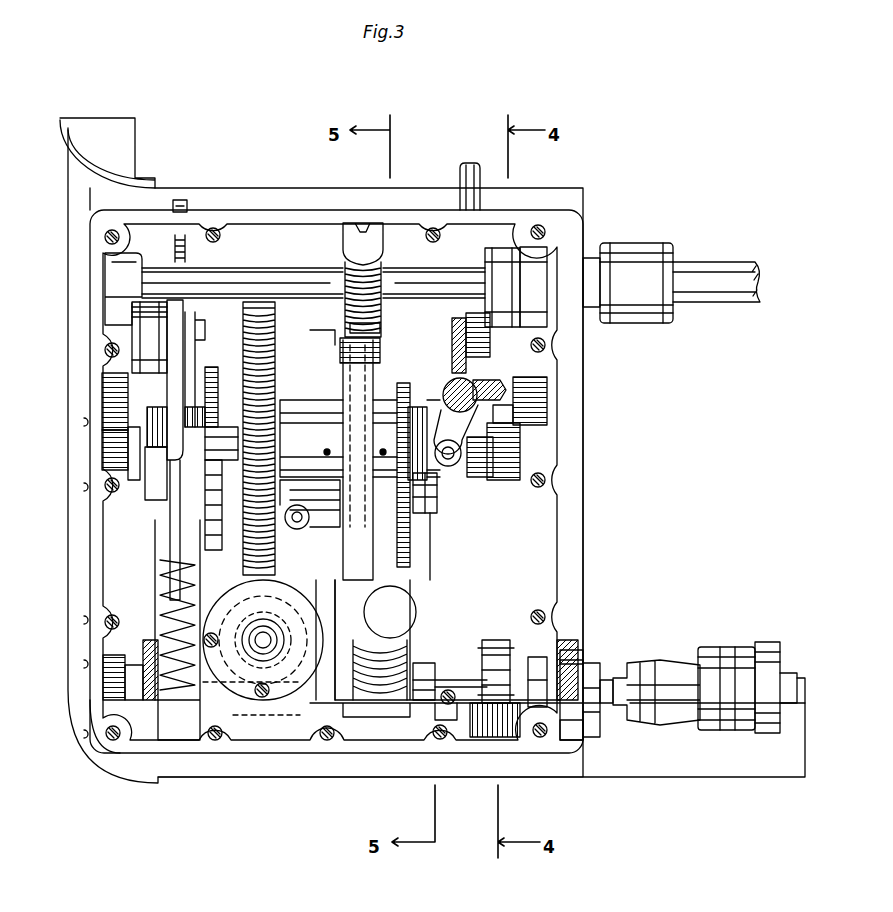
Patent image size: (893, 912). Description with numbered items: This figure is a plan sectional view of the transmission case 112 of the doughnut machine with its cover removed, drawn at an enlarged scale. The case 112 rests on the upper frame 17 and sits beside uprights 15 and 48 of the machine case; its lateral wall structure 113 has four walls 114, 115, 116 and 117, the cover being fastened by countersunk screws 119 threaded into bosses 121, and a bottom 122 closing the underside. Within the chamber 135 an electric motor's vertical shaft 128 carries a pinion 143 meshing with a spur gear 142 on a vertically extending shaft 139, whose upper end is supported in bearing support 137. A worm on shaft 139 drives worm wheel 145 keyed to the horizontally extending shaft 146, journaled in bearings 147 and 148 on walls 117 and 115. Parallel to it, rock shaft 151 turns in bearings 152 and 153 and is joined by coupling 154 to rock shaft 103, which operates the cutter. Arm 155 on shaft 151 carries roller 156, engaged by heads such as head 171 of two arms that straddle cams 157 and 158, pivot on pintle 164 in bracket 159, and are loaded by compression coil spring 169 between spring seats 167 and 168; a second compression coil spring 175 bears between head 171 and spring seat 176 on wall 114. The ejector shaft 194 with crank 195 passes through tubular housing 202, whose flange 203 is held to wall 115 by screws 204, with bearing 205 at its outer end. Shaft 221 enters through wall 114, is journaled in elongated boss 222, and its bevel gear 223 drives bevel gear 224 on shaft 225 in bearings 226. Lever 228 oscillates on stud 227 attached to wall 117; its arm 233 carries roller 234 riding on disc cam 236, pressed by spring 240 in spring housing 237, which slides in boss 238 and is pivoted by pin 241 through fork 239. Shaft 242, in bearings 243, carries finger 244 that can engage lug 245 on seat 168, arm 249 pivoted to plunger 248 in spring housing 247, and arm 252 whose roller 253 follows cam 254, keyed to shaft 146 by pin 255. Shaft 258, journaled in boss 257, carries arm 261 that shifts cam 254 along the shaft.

The uprights 15 is at (88, 766).
The upper and lower frames 17 is at (740, 770).
The uprights 48 is at (97, 172).
The rock shaft 103 is at (720, 275).
The case 112 is at (583, 185).
The lateral wall structure 113 is at (300, 210).
The wall 114 is at (278, 215).
The wall 115 is at (585, 533).
The wall 116 is at (247, 745).
The wall 117 is at (92, 543).
The countersunk screws 119 is at (108, 234).
The bosses 121 is at (115, 247).
The bottom 122 is at (550, 567).
The vertical shaft 128 is at (302, 528).
The chamber 135 is at (535, 517).
The bearing support 137 is at (248, 706).
The vertically extending shaft 139 is at (264, 648).
The spur gear 142 is at (228, 637).
The pinion 143 is at (287, 540).
The worm wheel 145 is at (231, 291).
The horizontally extending shaft 146 is at (477, 457).
The bearing 147 is at (112, 447).
The bearing 148 is at (537, 440).
The rock shaft 151 is at (230, 266).
The bearing 152 is at (112, 267).
The bearing 153 is at (530, 272).
The coupling 154 is at (647, 306).
The arm 155 is at (322, 335).
The roller 156 is at (377, 372).
The cam 157 is at (355, 392).
The cam 158 is at (335, 367).
The bracket 159 is at (315, 650).
The pintle 164 is at (379, 584).
The spring seat 167 is at (388, 613).
The spring seat 168 is at (357, 705).
The compression coil spring 169 is at (378, 702).
The head 171 is at (385, 328).
The compression coil spring 175 is at (378, 270).
The spring seat 176 is at (349, 254).
The shaft 194 is at (607, 680).
The crank 195 is at (782, 657).
The tubular housing 202 is at (672, 707).
The flange 203 is at (570, 740).
The screws 204 is at (585, 742).
The bearing 205 is at (719, 662).
The shaft 221 is at (466, 170).
The elongated boss 222 is at (585, 334).
The bevel gear 223 is at (585, 368).
The bevel gear 224 is at (441, 400).
The shaft 225 is at (503, 414).
The bearings 226 is at (112, 403).
The stud 227 is at (198, 245).
The lever 228 is at (172, 347).
The arm 233 is at (172, 396).
The roller 234 is at (215, 452).
The disc cam 236 is at (215, 505).
The spring housing 237 is at (158, 575).
The boss 238 is at (143, 650).
The fork 239 is at (200, 374).
The spring 240 is at (158, 608).
The pin 241 is at (203, 344).
The shaft 242 is at (535, 707).
The bearings 243 is at (113, 690).
The finger 244 is at (418, 683).
The lug 245 is at (430, 712).
The spring housing 247 is at (495, 740).
The plunger 248 is at (485, 675).
The arm 249 is at (500, 638).
The arm 252 is at (452, 570).
The roller 253 is at (437, 505).
The cam 254 is at (435, 550).
The pin 255 is at (400, 545).
The boss 257 is at (449, 465).
The shaft 258 is at (486, 372).
The arm 261 is at (470, 412).